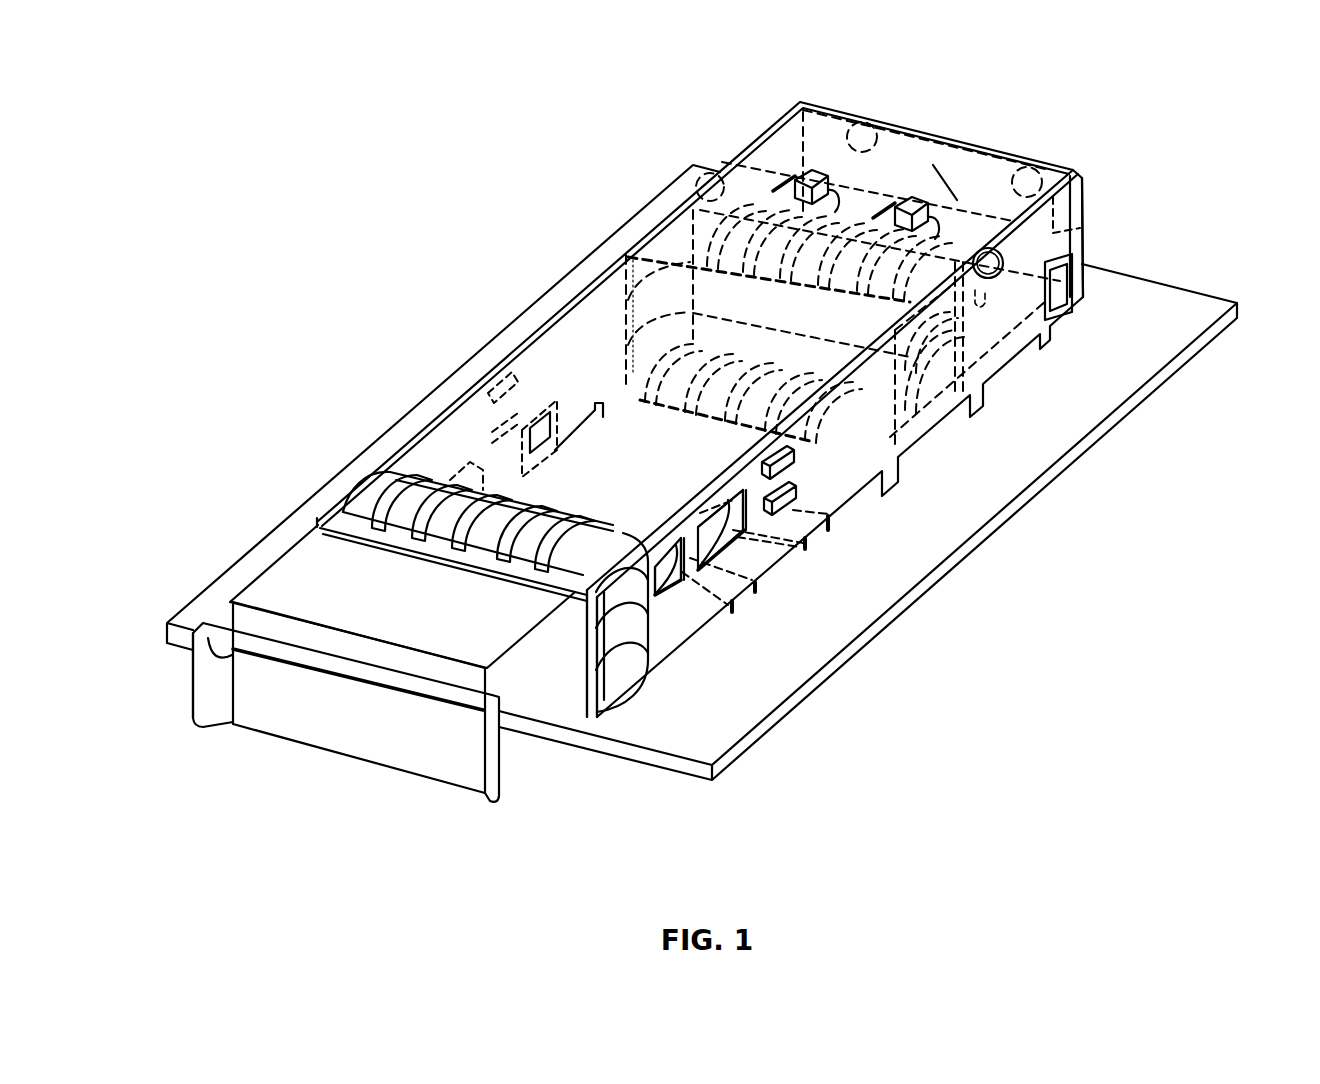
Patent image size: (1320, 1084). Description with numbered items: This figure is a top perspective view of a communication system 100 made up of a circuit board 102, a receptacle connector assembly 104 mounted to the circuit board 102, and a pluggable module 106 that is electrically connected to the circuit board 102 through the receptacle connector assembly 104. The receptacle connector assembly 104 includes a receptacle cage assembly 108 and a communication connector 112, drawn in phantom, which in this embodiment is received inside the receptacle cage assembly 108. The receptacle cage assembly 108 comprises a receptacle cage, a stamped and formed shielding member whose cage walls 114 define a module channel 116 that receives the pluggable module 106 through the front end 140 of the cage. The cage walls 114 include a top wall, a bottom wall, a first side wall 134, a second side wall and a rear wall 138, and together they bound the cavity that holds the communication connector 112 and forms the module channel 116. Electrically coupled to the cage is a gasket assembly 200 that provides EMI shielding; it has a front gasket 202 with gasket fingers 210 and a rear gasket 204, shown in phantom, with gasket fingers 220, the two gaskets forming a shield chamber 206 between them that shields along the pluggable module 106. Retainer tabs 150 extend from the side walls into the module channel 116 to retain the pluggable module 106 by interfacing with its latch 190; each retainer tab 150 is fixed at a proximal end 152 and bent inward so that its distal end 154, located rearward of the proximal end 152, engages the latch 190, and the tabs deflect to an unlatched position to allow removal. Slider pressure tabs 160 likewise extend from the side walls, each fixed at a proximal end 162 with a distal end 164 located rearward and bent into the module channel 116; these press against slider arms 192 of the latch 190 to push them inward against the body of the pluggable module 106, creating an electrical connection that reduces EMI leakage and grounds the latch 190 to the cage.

The communication system 100 is at (702, 449).
The circuit board 102 is at (698, 444).
The receptacle connector assembly 104 is at (704, 324).
The pluggable module 106 is at (421, 636).
The receptacle cage assembly 108 is at (884, 380).
The communication connector 112 is at (1080, 233).
The cage walls 114 is at (832, 493).
The module channel 116 is at (384, 553).
The first side wall 134 is at (833, 492).
The rear wall 138 is at (1083, 197).
The front end 140 is at (587, 712).
The retainer tabs 150 is at (780, 530).
The proximal end 152 is at (757, 533).
The distal end 154 is at (830, 500).
The slider pressure tabs 160 is at (690, 590).
The proximal end 162 is at (668, 603).
The distal end 164 is at (728, 560).
The latch 190 is at (512, 742).
The slider arms 192 is at (218, 682).
The gasket assembly 200 is at (414, 450).
The front gasket 202 is at (392, 466).
The rear gasket 204 is at (688, 236).
The shield chamber 206 is at (484, 396).
The gasket fingers 210 is at (427, 500).
The gasket fingers 220 is at (805, 112).